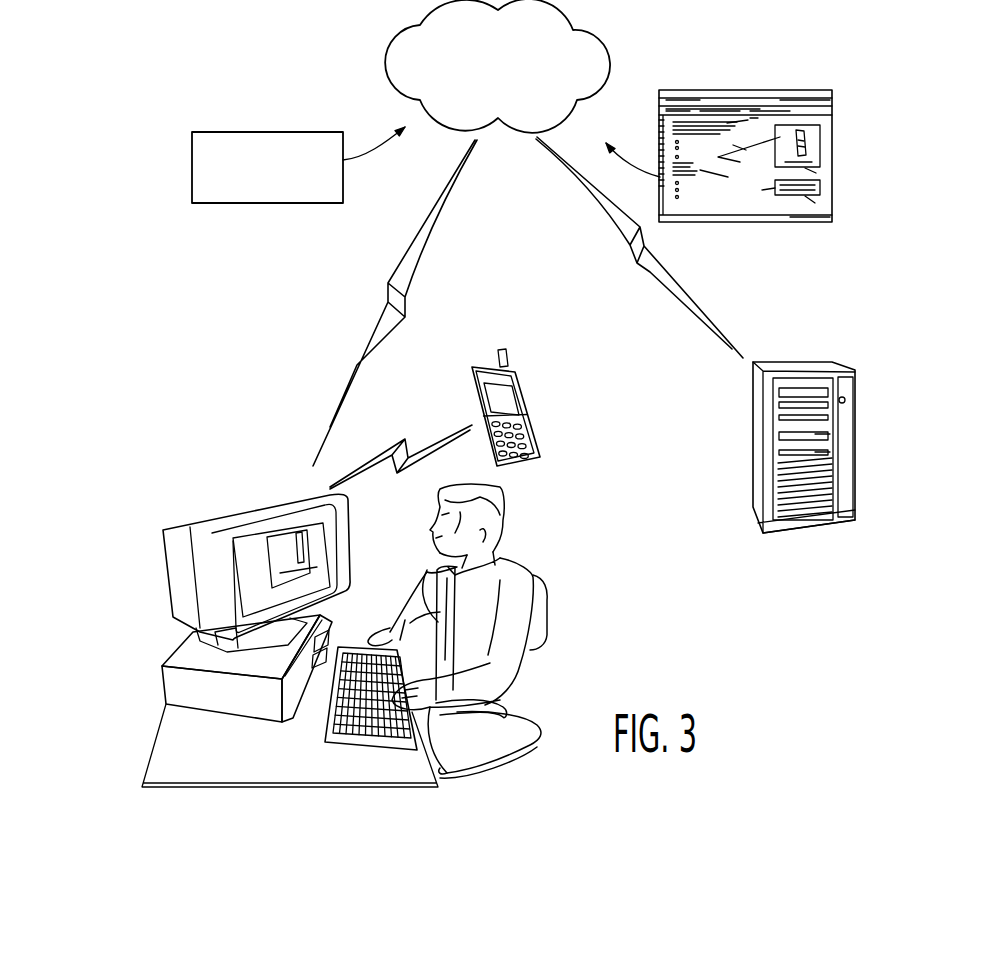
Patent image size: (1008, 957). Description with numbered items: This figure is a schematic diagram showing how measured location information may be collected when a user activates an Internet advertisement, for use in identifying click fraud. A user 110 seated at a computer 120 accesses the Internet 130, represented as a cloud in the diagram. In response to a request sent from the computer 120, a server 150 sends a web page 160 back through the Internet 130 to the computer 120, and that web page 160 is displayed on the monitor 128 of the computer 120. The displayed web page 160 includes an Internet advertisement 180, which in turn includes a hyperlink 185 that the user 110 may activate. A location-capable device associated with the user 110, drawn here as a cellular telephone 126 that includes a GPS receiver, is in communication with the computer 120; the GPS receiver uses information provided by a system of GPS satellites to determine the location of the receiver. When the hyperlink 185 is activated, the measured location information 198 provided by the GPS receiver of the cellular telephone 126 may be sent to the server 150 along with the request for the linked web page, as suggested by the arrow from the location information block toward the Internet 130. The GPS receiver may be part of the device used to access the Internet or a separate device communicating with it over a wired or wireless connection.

The user 110 is at (507, 565).
The computer 120 is at (268, 728).
The cellular telephone 126 is at (545, 450).
The monitor 128 is at (225, 529).
The Internet 130 is at (610, 52).
The server 150 is at (757, 423).
The web page 160 is at (792, 92).
The Internet advertisement 180 is at (267, 566).
The hyperlink 185 is at (183, 622).
The measured location information 198 is at (232, 132).